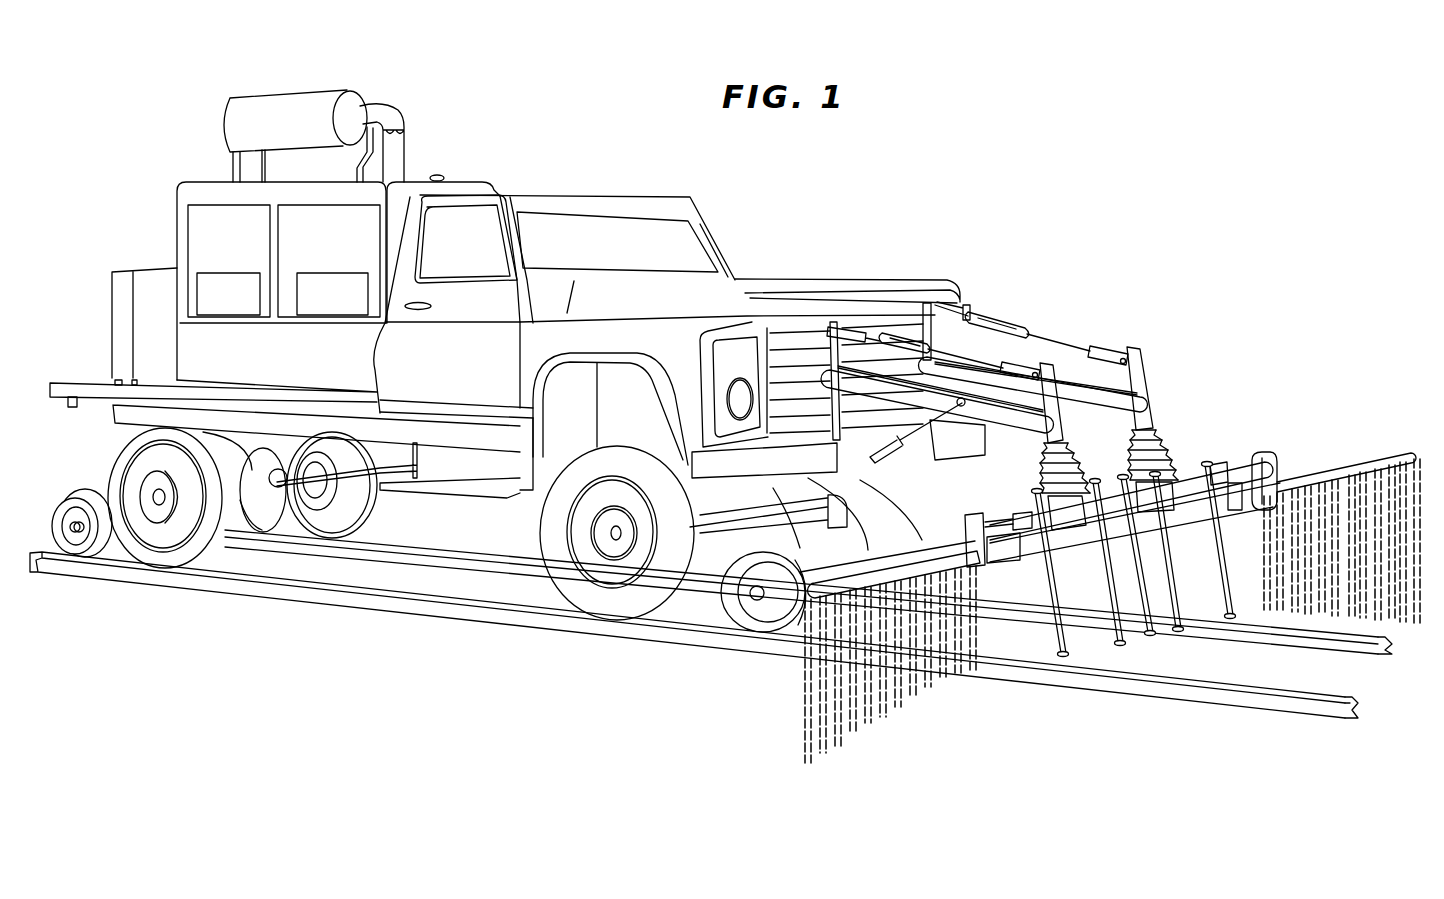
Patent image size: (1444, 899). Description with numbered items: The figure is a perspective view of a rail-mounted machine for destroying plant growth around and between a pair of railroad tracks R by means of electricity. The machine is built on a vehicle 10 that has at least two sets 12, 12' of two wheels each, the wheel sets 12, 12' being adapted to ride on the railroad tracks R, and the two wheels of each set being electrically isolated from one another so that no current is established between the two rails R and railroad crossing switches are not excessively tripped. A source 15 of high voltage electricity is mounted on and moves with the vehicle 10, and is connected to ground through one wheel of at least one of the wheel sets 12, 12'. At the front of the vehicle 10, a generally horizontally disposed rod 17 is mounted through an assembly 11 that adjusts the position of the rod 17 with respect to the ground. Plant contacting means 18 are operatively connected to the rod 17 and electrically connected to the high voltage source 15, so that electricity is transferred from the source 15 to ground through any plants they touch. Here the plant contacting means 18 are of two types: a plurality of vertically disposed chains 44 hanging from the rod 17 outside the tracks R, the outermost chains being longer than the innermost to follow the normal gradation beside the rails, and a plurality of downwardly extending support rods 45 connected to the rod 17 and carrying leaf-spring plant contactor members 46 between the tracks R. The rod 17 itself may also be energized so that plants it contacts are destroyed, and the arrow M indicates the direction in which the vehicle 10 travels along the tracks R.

The vehicle 10 is at (826, 212).
The assembly 11 is at (1136, 312).
The wheel set 12 is at (768, 590).
The wheel set 12' is at (82, 552).
The source of high voltage electricity 15 is at (203, 114).
The rod 17 is at (1318, 477).
The plant contacting means 18 is at (1105, 652).
The chains 44 is at (862, 718).
The support rods 45 is at (1222, 600).
The leaf-spring plant contactor members 46 is at (1003, 654).
The railroad tracks R is at (1372, 668).
The direction of movement M is at (1222, 399).